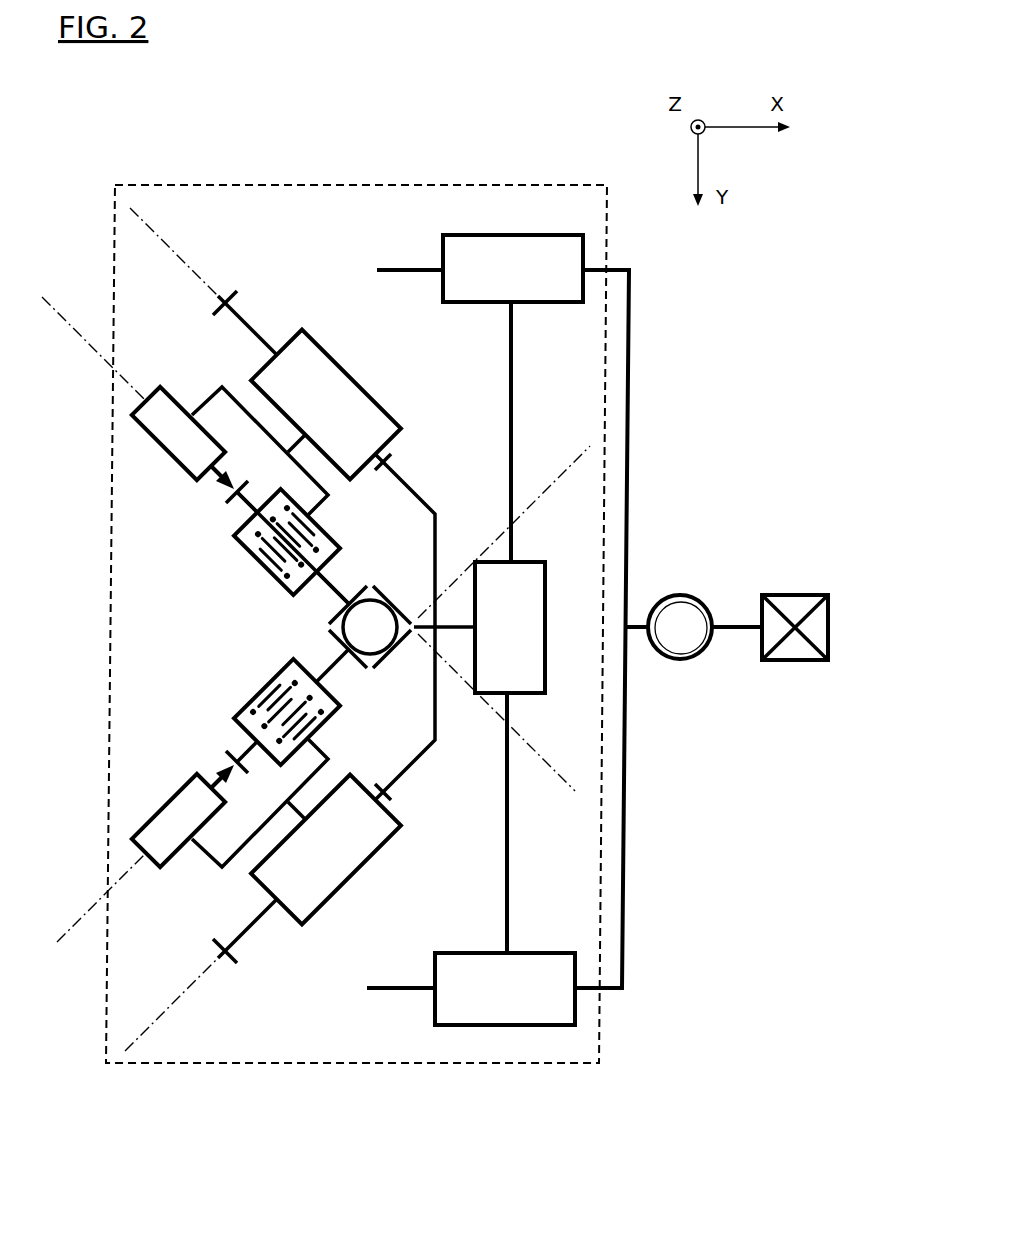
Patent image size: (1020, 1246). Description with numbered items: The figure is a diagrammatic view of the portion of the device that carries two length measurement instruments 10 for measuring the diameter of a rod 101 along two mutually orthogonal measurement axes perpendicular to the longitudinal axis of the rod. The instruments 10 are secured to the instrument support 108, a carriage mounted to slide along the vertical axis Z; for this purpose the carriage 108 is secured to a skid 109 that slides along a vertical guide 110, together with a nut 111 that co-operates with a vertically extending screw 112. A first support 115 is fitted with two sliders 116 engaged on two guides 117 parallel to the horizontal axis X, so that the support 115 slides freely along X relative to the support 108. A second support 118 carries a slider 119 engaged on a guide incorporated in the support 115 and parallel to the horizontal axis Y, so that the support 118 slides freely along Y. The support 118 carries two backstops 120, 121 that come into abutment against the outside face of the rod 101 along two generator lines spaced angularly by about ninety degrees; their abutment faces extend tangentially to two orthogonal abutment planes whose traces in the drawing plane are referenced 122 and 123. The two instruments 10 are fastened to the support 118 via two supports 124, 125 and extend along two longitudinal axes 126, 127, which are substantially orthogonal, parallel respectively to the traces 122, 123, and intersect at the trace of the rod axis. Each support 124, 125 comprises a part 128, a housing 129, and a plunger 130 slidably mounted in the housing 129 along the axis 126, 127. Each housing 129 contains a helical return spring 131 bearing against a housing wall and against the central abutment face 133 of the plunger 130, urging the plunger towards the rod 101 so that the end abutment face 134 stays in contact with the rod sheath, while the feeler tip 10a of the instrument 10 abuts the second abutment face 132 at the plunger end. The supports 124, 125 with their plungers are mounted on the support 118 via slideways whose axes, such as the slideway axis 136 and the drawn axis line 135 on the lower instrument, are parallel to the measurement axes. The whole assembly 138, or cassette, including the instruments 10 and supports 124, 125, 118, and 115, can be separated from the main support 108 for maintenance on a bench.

The length measurement instrument 10 is at (141, 598).
The feeler tip 10a is at (220, 484).
The rod 101 is at (369, 655).
The instrument support 108 is at (628, 468).
The skid 109 is at (795, 662).
The vertical guide 110 is at (782, 607).
The nut 111 is at (682, 659).
The screw 112 is at (681, 612).
The first support 115 is at (514, 418).
The slider 116 is at (509, 630).
The guide 117 is at (392, 268).
The second support 118 is at (438, 553).
The slider 119 is at (510, 627).
The backstop 120 is at (390, 647).
The backstop 121 is at (397, 603).
The abutment plane trace 122 is at (552, 484).
The abutment plane trace 123 is at (528, 744).
The support 124 is at (201, 911).
The support 125 is at (231, 363).
The longitudinal axis 126 is at (108, 890).
The longitudinal axis 127 is at (95, 302).
The part 128 is at (348, 375).
The housing 129 is at (332, 512).
The plunger 130 is at (246, 495).
The return spring 131 is at (252, 553).
The second abutment face 132 is at (235, 534).
The central abutment face 133 is at (291, 577).
The end abutment face 134 is at (356, 596).
The reference axis 135 is at (158, 1013).
The slideway axis 136 is at (176, 253).
The assembly 138 is at (344, 185).